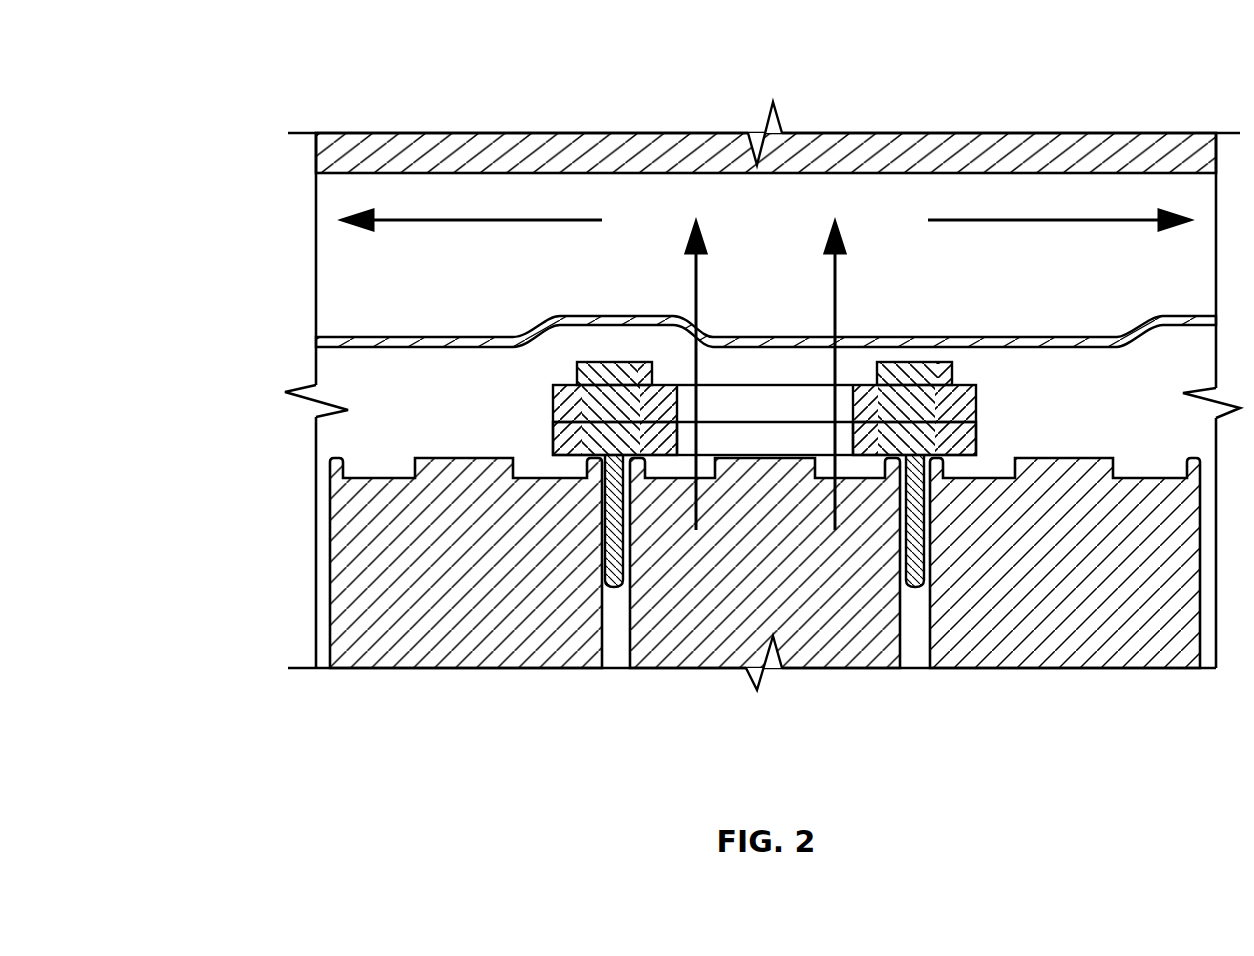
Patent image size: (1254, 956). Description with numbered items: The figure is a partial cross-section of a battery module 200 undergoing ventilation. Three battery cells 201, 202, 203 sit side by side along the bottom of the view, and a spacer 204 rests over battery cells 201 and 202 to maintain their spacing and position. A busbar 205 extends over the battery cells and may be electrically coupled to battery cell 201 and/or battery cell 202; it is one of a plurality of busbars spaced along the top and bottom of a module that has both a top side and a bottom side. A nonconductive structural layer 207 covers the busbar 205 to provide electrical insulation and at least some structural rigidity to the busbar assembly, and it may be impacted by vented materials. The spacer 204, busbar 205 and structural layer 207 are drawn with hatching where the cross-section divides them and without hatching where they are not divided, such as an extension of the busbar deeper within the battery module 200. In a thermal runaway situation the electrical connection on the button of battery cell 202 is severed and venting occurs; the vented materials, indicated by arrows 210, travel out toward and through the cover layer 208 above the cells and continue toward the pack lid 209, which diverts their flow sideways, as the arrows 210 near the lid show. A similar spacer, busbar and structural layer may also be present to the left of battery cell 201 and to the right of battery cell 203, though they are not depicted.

The battery module 200 is at (732, 45).
The battery cell 201 is at (550, 650).
The battery cell 202 is at (832, 650).
The battery cell 203 is at (1128, 650).
The spacer 204 is at (553, 442).
The busbar 205 is at (553, 407).
The nonconductive structural layer 207 is at (577, 373).
The cover layer 208 is at (1010, 338).
The pack lid 209 is at (1113, 133).
The arrows 210 is at (472, 220).